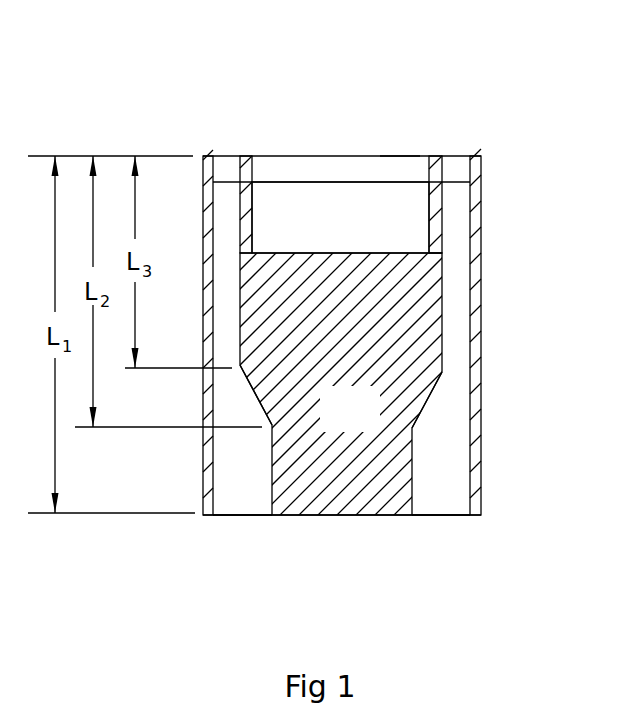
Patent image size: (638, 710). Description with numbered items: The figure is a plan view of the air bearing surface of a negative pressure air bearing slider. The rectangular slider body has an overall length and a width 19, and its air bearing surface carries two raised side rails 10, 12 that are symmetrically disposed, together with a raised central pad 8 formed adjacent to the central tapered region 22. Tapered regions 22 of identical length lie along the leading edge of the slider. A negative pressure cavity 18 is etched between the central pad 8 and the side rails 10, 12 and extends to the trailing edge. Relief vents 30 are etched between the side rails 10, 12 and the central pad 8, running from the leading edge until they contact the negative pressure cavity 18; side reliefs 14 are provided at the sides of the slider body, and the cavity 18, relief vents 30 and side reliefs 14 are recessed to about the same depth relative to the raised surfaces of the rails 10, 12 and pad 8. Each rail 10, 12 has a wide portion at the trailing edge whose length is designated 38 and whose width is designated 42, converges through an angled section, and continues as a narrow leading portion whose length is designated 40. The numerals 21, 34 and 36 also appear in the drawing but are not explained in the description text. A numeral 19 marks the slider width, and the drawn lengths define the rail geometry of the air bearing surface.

The central pad 8 is at (332, 229).
The side rail 10 is at (226, 490).
The side rail 12 is at (428, 490).
The side relief 14 is at (207, 458).
The negative pressure cavity 18 is at (363, 423).
The width of the slider 19 is at (481, 517).
The top surface 21 is at (400, 157).
The tapered region 22 is at (220, 163).
The relief vent 30 is at (272, 163).
The inner wall 34 is at (247, 162).
The shoulder 36 is at (375, 300).
The trailing edge rail length 38 is at (275, 453).
The leading edge rail length 40 is at (242, 303).
The trailing edge rail width 42 is at (245, 517).